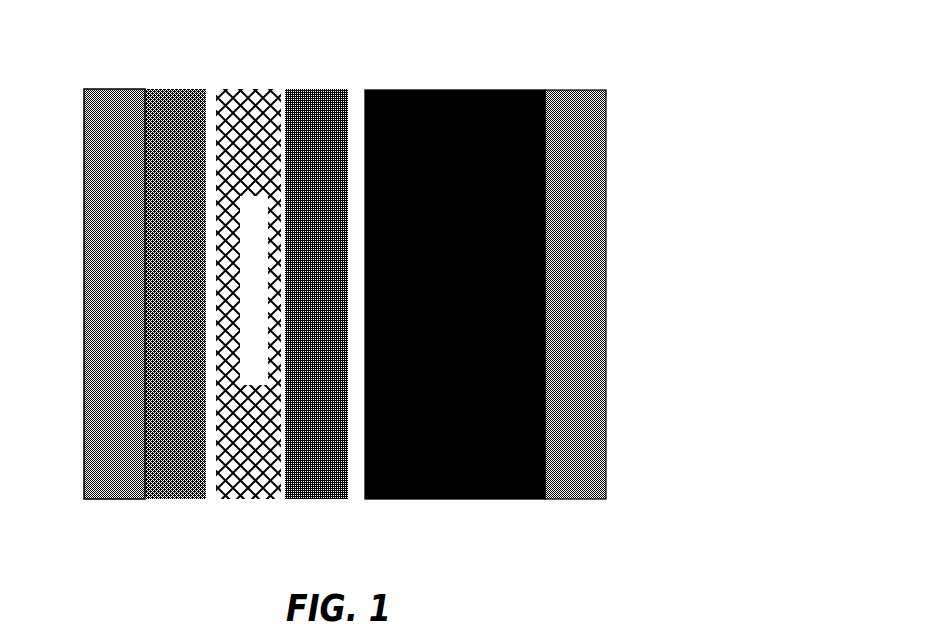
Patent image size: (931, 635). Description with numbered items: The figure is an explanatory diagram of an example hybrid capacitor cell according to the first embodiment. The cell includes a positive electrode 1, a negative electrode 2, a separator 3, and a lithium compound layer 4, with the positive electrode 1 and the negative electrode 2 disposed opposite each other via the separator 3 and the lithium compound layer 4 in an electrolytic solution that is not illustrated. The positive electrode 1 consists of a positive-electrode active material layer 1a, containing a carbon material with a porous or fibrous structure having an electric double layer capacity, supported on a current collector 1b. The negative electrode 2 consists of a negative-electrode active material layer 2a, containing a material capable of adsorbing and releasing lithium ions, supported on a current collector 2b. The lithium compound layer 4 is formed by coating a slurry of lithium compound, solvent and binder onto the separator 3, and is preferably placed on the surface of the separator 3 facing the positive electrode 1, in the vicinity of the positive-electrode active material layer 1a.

The positive electrode 1 is at (485, 304).
The positive-electrode active material layer 1a is at (439, 84).
The current collector 1b is at (563, 88).
The negative electrode 2 is at (173, 304).
The negative-electrode active material layer 2a is at (162, 88).
The current collector 2b is at (97, 88).
The separator 3 is at (234, 88).
The lithium compound layer 4 is at (304, 88).